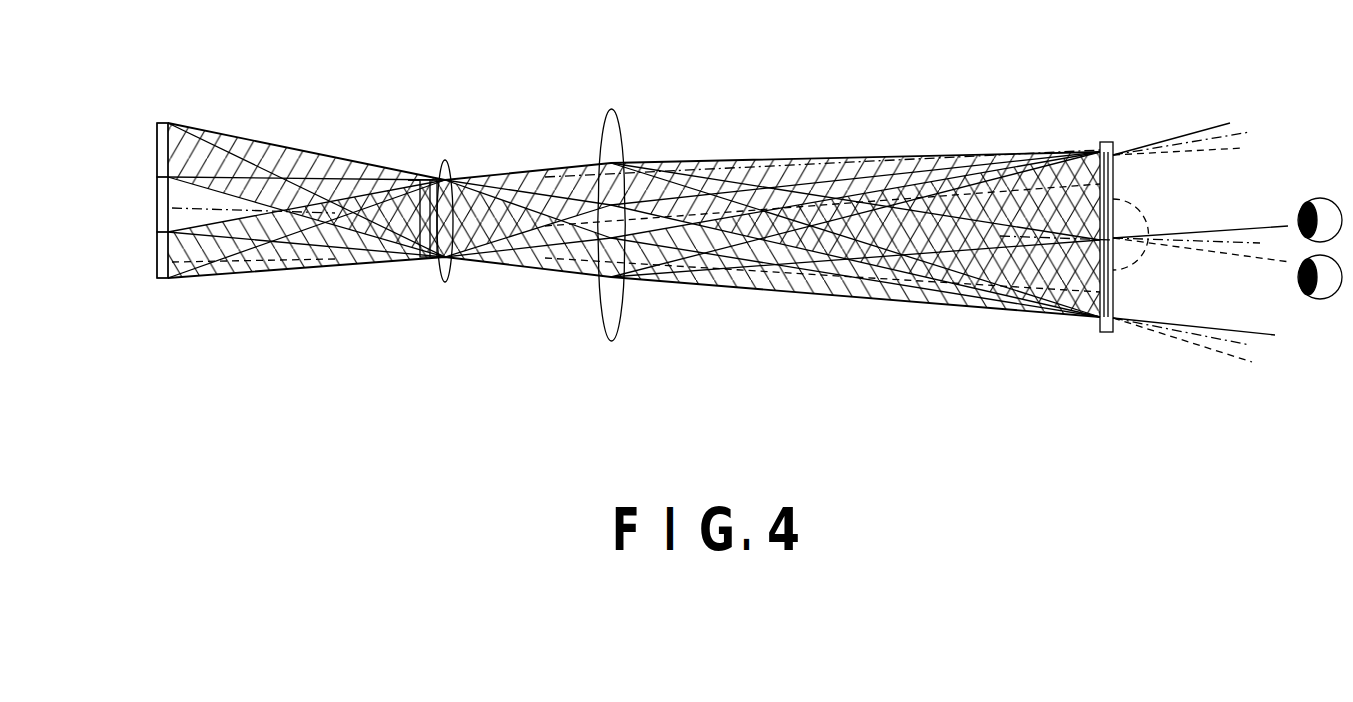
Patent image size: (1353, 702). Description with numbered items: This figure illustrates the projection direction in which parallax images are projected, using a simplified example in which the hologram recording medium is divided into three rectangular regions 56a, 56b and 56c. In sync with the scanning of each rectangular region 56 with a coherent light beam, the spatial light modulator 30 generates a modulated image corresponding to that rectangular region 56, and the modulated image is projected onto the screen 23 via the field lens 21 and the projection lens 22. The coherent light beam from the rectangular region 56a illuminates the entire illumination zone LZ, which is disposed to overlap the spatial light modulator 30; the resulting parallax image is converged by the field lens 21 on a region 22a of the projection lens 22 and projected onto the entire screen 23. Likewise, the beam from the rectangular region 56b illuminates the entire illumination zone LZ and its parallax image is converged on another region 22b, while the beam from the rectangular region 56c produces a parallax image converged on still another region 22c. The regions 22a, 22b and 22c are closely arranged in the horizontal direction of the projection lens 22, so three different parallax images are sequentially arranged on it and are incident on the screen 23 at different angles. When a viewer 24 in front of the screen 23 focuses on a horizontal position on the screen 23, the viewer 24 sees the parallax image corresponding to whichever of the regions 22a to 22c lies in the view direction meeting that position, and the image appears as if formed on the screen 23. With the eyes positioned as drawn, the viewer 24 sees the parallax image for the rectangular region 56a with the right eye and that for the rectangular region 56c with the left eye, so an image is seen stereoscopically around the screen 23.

The rectangular region 56 is at (136, 161).
The rectangular region 56a is at (155, 160).
The rectangular region 56b is at (155, 220).
The rectangular region 56c is at (155, 265).
The illumination zone LZ is at (408, 180).
The spatial light modulator 30 is at (422, 180).
The field lens 21 is at (448, 162).
The projection lens 22 is at (665, 224).
The region 22a is at (617, 188).
The region 22b is at (645, 280).
The region 22c is at (610, 260).
The screen 23 is at (1102, 143).
The viewer 24 is at (1323, 298).